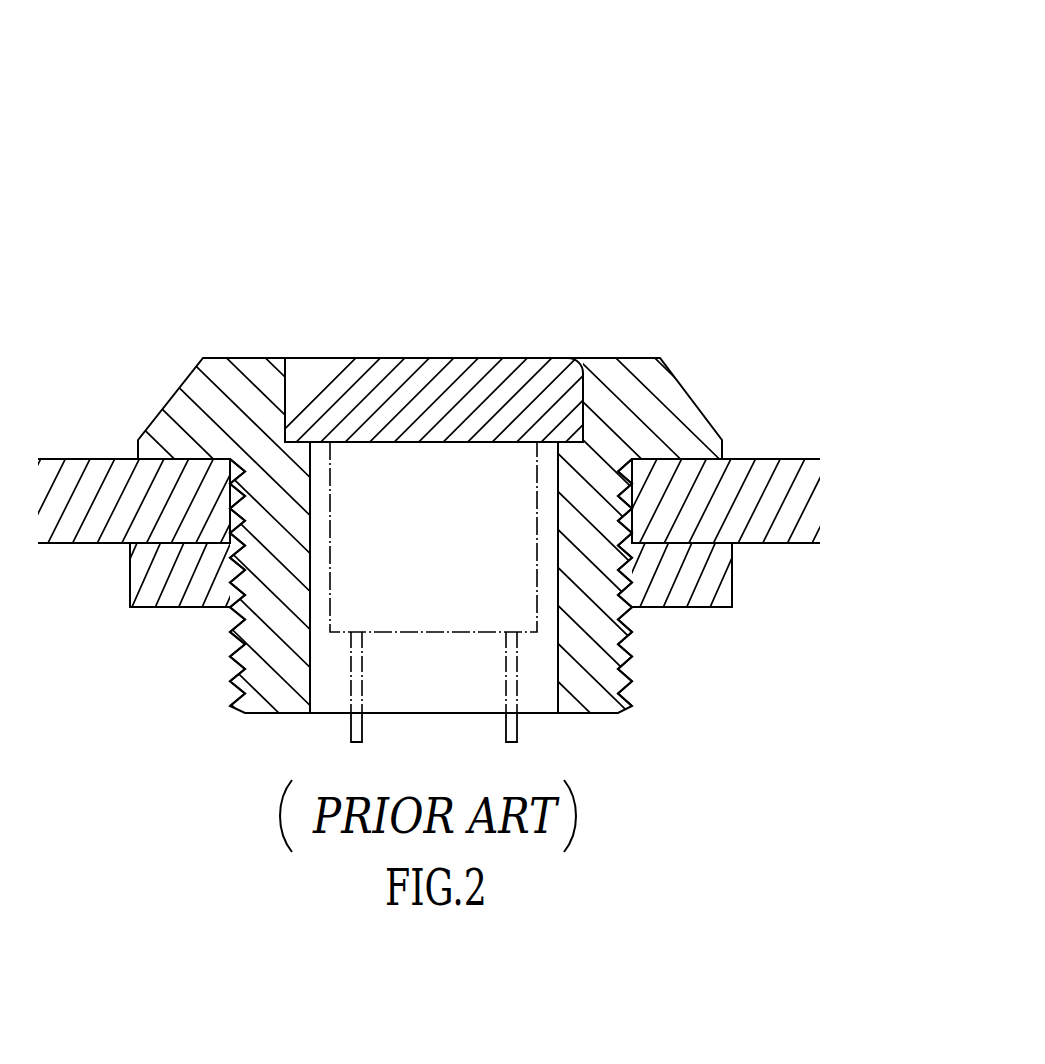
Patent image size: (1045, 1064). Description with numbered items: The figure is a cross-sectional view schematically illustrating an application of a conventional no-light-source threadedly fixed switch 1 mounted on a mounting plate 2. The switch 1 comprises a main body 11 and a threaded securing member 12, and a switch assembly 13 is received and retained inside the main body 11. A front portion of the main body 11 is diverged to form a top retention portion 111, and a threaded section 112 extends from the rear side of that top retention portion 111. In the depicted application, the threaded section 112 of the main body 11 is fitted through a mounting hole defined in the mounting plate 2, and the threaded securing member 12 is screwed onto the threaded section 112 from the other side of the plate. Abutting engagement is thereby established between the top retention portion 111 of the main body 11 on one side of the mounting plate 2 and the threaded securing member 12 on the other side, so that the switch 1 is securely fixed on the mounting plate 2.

The switch 1 is at (240, 72).
The main body 11 is at (670, 392).
The top retention portion 111 is at (507, 367).
The threaded section 112 is at (618, 677).
The threaded securing member 12 is at (718, 585).
The switch assembly 13 is at (530, 610).
The mounting plate 2 is at (740, 468).